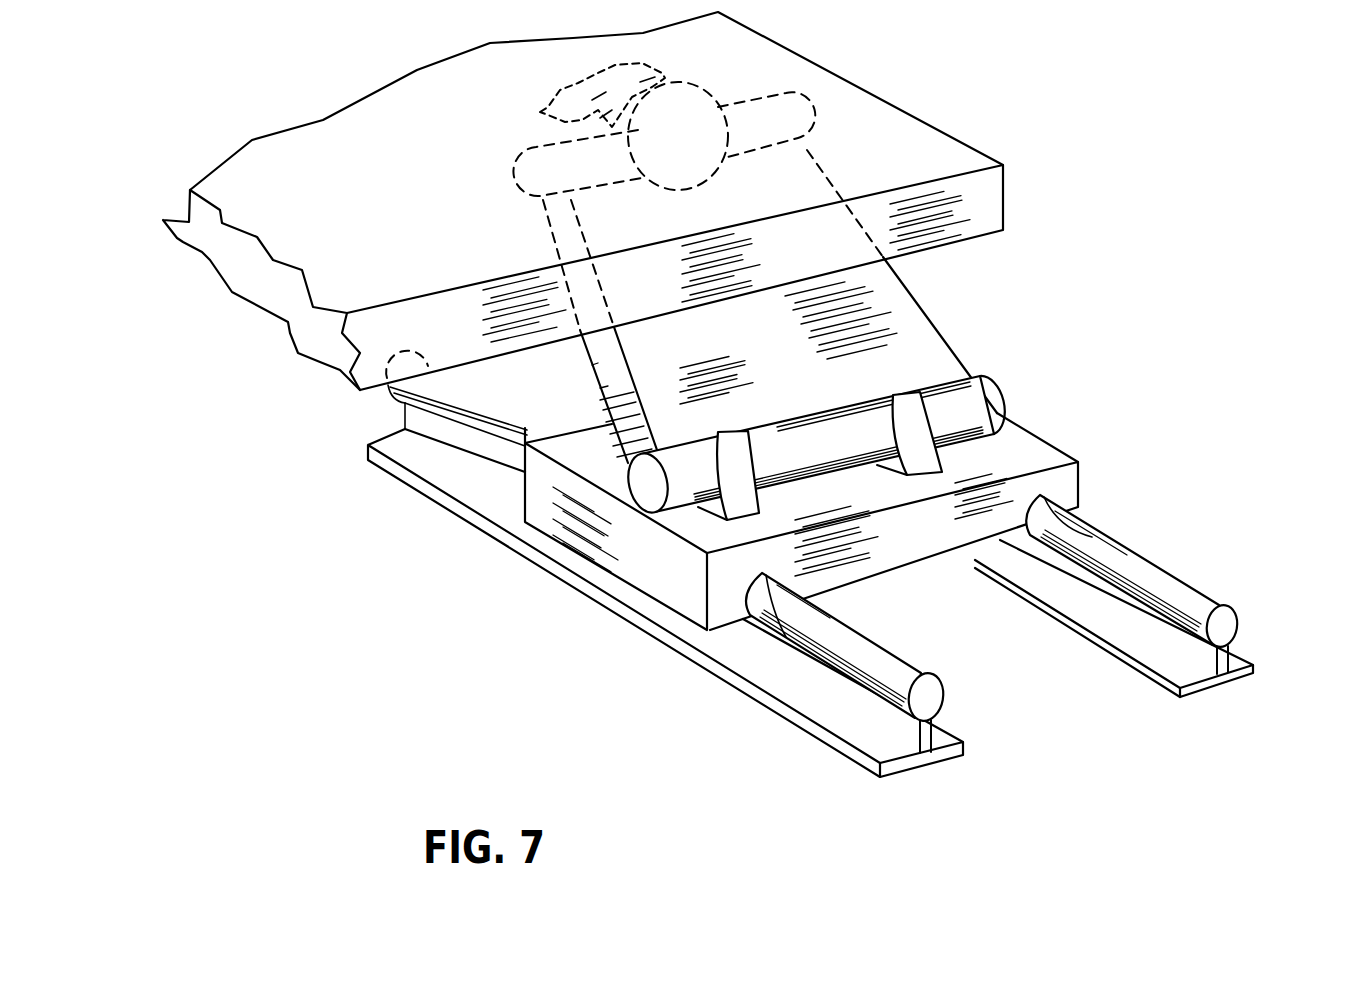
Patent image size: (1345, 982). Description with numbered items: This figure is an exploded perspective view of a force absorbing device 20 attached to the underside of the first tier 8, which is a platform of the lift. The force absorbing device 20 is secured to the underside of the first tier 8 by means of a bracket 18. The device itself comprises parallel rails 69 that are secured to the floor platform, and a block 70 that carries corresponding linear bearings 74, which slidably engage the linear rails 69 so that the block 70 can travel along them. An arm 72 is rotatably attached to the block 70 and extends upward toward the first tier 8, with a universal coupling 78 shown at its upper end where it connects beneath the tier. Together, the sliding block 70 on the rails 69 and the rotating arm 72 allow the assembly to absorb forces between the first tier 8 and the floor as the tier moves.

The first tier 8 is at (1003, 198).
The bracket 18 is at (570, 125).
The force absorbing device 20 is at (925, 288).
The parallel rails 69 is at (1237, 623).
The block 70 is at (1050, 443).
The arm 72 is at (933, 328).
The linear bearings 74 is at (1070, 527).
The universal coupling 78 is at (670, 117).